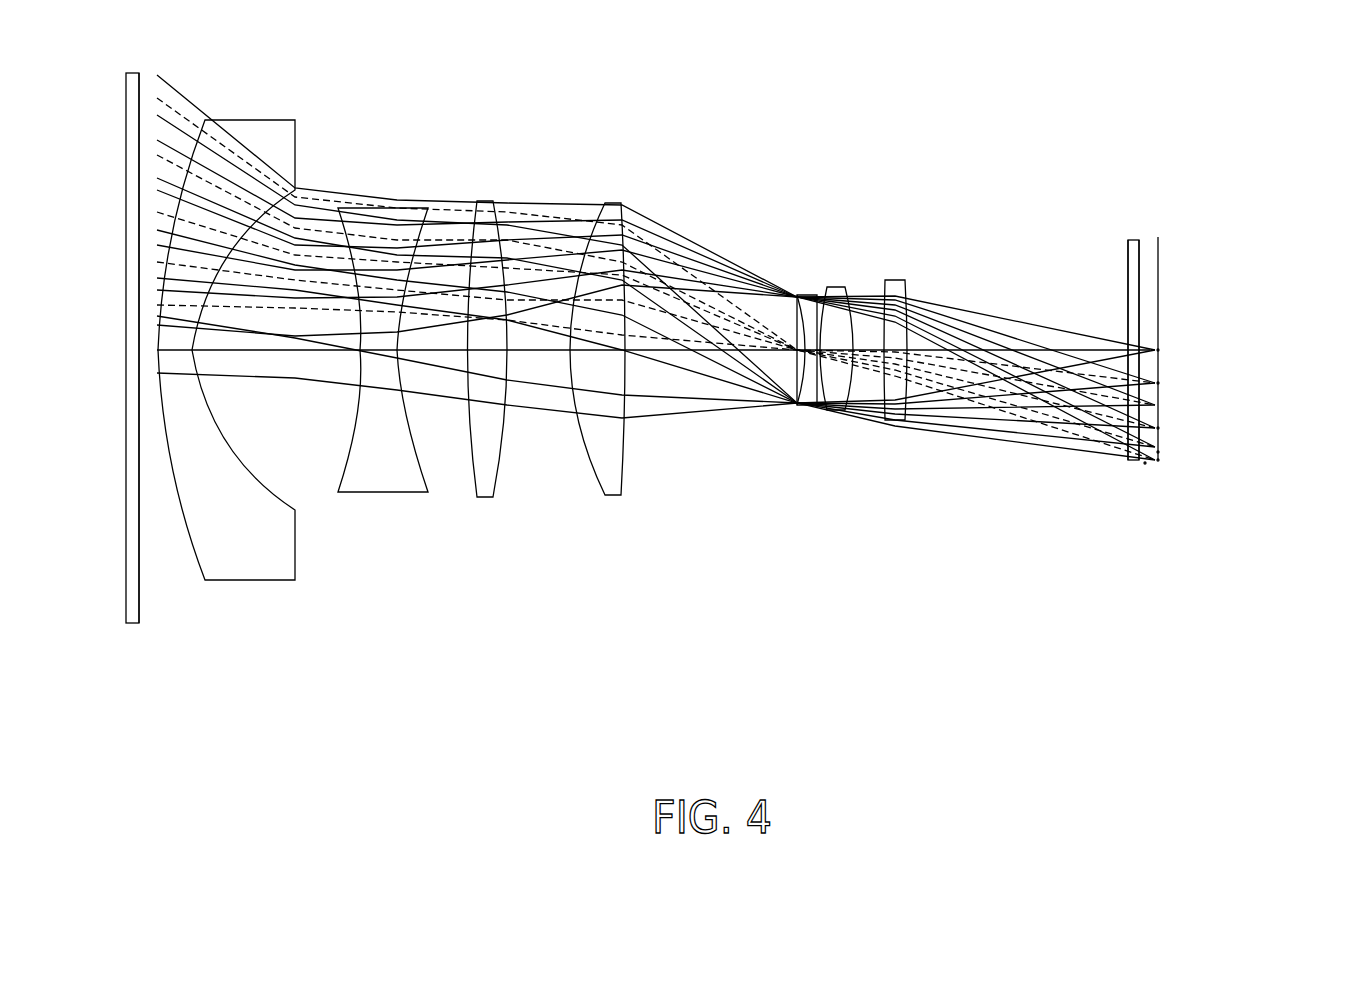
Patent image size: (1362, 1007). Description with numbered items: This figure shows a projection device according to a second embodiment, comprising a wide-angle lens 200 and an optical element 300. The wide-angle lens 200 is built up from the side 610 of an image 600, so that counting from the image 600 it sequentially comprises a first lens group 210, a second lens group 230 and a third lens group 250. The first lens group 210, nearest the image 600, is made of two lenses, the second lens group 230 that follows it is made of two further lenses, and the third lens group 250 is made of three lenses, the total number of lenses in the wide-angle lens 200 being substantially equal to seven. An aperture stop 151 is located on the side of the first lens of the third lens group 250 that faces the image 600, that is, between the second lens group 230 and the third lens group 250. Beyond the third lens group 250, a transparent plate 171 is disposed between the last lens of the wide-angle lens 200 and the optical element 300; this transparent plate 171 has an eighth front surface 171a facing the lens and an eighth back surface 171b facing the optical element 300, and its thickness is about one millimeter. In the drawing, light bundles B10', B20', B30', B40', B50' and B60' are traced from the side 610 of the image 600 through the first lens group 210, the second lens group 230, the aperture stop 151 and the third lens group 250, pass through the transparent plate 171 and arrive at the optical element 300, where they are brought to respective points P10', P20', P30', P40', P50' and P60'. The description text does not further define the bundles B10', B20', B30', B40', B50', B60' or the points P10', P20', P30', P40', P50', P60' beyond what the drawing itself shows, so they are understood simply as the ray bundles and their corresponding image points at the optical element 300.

The wide-angle lens 200 is at (532, 384).
The first lens group 210 is at (208, 103).
The second lens group 230 is at (478, 187).
The aperture stop 151 is at (795, 298).
The third lens group 250 is at (852, 319).
The transparent plate 171 is at (1134, 238).
The eighth front surface 171a is at (1125, 262).
The eighth back surface 171b is at (1142, 262).
The optical element 300 is at (1160, 268).
The image 600 is at (133, 625).
The side of the image 610 is at (148, 574).
The first light beam B10' is at (704, 351).
The second light beam B20' is at (696, 337).
The third light beam B30' is at (708, 334).
The fourth light beam B40' is at (711, 328).
The fifth light beam B50' is at (710, 324).
The sixth light beam B60' is at (656, 289).
The first image point P10' is at (1222, 344).
The second image point P20' is at (1234, 388).
The third image point P30' is at (1243, 438).
The fourth image point P40' is at (1241, 471).
The fifth image point P50' is at (1242, 495).
The sixth image point P60' is at (1176, 518).